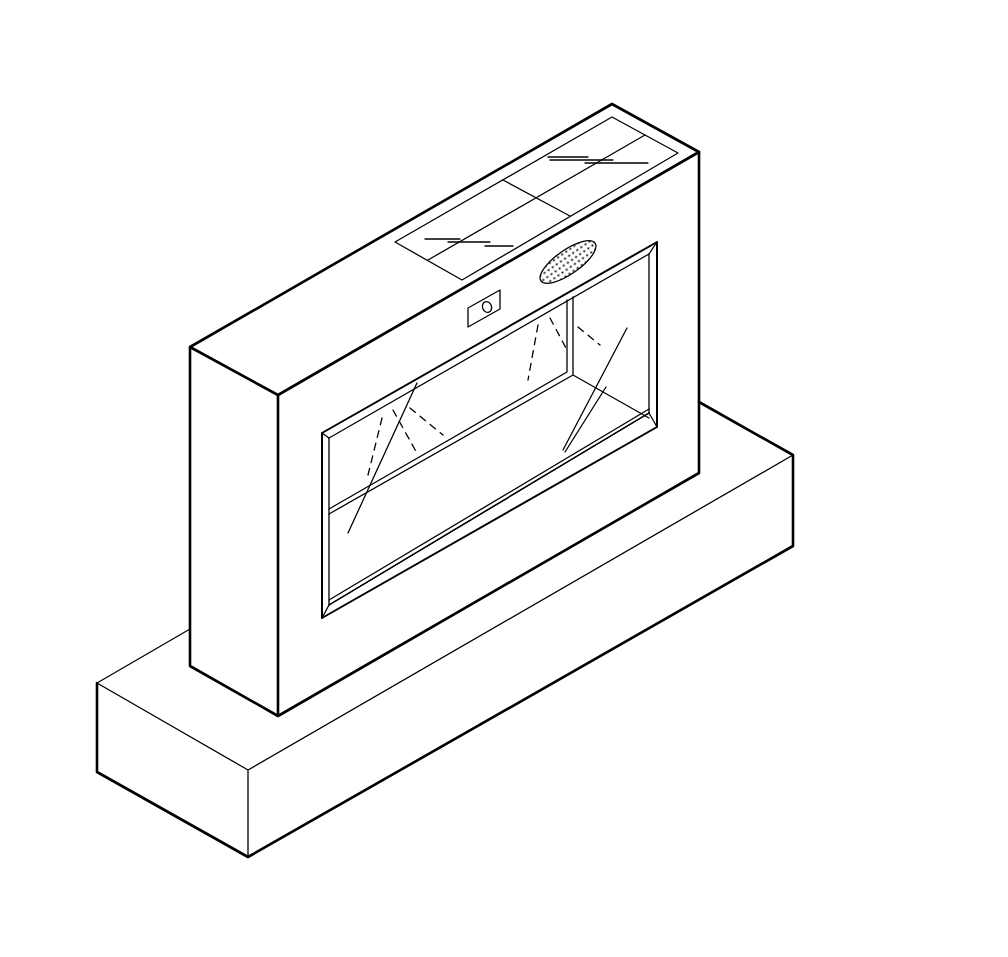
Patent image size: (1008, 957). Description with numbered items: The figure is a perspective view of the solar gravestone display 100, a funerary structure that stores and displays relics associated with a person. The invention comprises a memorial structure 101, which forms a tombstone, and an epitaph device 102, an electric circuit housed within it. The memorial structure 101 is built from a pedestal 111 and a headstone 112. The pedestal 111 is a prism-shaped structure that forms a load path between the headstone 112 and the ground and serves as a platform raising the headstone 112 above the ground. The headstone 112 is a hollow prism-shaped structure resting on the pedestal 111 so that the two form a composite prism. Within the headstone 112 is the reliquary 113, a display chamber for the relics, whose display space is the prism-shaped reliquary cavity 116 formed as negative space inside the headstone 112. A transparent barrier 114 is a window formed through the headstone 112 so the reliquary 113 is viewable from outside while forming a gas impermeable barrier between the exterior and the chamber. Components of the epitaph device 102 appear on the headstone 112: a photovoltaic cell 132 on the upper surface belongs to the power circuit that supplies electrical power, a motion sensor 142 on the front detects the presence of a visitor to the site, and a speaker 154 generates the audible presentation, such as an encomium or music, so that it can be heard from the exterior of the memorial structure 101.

The solar gravestone display 100 is at (143, 287).
The memorial structure 101 is at (190, 528).
The epitaph device 102 is at (673, 202).
The pedestal 111 is at (770, 508).
The headstone 112 is at (253, 333).
The reliquary 113 is at (303, 560).
The transparent barrier 114 is at (647, 357).
The reliquary cavity 116 is at (425, 525).
The photovoltaic cell 132 is at (640, 150).
The motion sensor 142 is at (467, 313).
The speaker 154 is at (584, 256).